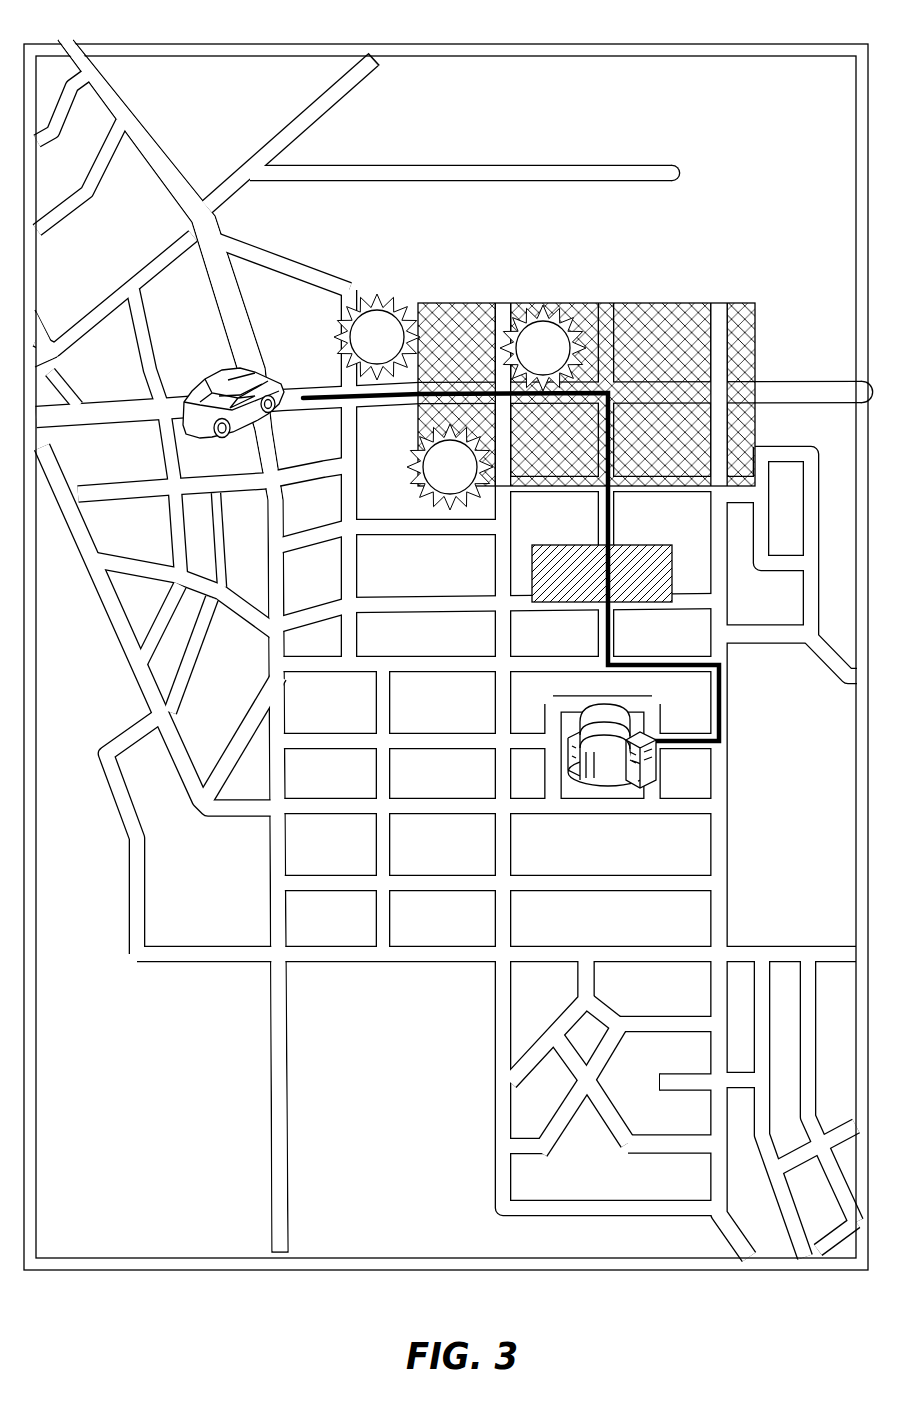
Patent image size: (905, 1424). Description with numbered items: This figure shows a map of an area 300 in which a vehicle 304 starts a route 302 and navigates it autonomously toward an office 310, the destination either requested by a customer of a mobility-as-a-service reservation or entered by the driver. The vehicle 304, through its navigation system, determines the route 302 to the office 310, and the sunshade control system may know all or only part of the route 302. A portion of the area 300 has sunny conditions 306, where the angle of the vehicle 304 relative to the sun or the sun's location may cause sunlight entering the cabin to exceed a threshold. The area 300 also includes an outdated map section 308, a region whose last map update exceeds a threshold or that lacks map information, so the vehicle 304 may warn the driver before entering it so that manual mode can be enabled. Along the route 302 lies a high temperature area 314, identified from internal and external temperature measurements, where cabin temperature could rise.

The area 300 is at (678, 57).
The route 302 is at (614, 522).
The vehicle 304 is at (268, 368).
The sunny conditions 306 is at (387, 300).
The outdated map section 308 is at (588, 303).
The office 310 is at (580, 765).
The high temperature area 314 is at (672, 562).